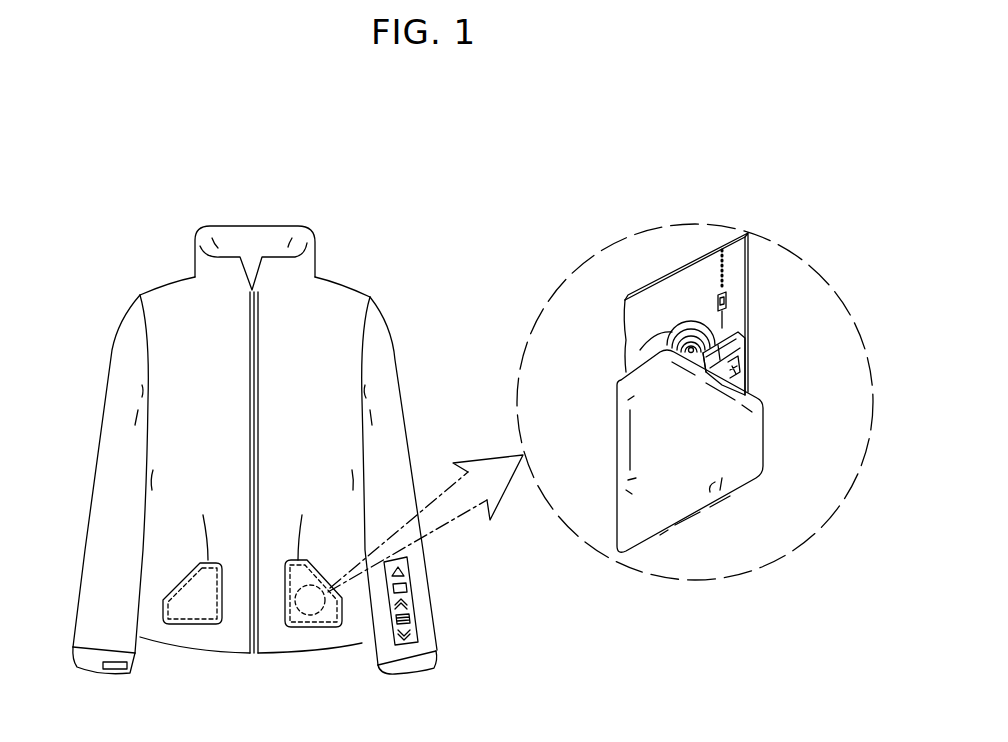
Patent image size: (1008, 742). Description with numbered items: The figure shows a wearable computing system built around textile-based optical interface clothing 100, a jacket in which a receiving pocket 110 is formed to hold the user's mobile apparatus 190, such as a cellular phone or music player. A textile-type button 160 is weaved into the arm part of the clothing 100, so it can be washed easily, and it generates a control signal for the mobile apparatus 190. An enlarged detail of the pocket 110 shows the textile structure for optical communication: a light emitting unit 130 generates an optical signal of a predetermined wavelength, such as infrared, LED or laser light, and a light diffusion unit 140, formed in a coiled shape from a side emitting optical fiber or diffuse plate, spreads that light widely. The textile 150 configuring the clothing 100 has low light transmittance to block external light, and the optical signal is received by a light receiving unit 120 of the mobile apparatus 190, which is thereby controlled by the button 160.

The textile-based optical interface clothing 100 is at (252, 225).
The pocket 110 is at (725, 482).
The light receiving unit 120 is at (745, 356).
The light emitting unit 130 is at (730, 300).
The light diffusion unit 140 is at (628, 348).
The textile 150 is at (668, 293).
The textile-type button 160 is at (412, 660).
The mobile apparatus 190 is at (740, 370).